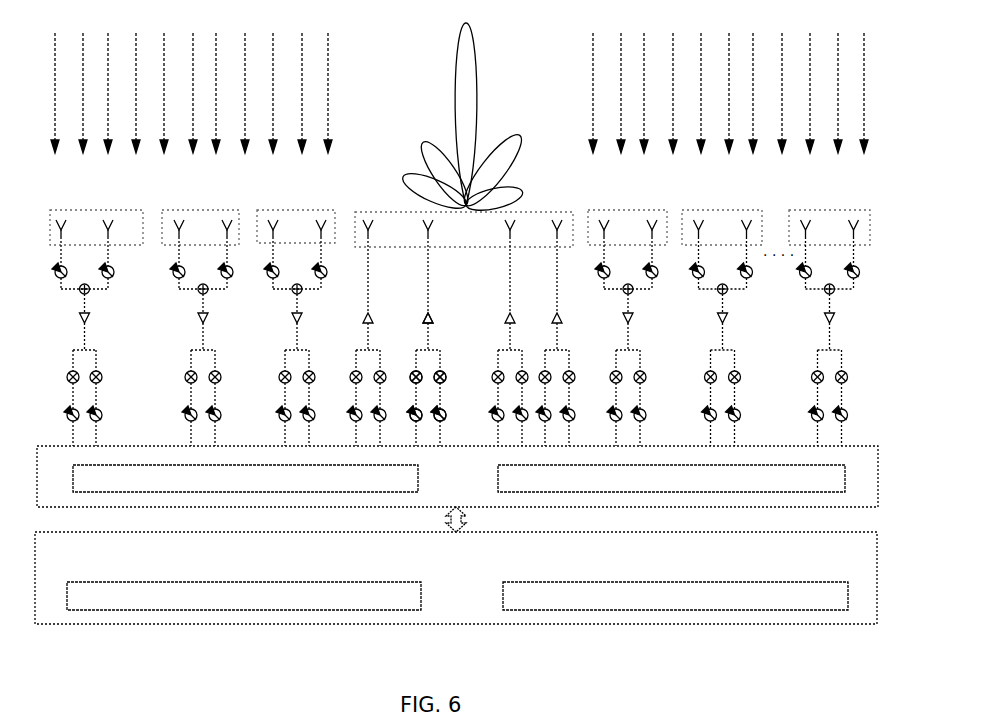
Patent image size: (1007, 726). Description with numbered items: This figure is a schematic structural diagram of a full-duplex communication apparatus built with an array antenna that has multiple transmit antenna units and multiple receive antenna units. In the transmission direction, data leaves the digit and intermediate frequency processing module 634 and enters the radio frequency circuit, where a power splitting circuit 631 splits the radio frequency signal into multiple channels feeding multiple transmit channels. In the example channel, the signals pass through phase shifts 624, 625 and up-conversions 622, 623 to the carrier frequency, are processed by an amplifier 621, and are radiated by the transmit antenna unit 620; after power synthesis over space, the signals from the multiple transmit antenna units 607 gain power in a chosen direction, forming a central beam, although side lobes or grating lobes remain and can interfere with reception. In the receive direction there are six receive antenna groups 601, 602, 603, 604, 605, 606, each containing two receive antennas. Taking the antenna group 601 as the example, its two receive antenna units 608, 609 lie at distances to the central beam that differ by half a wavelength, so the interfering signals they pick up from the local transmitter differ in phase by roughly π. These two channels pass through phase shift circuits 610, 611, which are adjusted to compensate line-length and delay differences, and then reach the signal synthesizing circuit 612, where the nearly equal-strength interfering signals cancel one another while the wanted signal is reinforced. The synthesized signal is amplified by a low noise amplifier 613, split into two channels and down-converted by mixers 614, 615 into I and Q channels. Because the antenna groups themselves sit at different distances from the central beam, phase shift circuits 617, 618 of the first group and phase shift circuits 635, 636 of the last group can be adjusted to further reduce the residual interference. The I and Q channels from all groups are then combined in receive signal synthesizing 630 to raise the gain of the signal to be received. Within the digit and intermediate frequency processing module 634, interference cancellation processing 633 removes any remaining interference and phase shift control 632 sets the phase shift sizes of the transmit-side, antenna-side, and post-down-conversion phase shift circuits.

The receive antenna group 601 is at (128, 190).
The receive antenna group 602 is at (190, 210).
The receive antenna group 603 is at (283, 210).
The receive antenna group 604 is at (620, 210).
The receive antenna group 605 is at (713, 210).
The receive antenna group 606 is at (820, 210).
The transmit antenna units 607 is at (412, 205).
The receive antenna unit 608 is at (75, 243).
The receive antenna unit 609 is at (122, 243).
The phase shift circuit 610 is at (73, 266).
The phase shift circuit 611 is at (120, 266).
The signal synthesizing circuit 612 is at (102, 302).
The low noise amplifier 613 is at (100, 320).
The mixer 614 is at (56, 378).
The mixer 615 is at (110, 378).
The phase shift circuit 617 is at (55, 414).
The phase shift circuit 618 is at (109, 414).
The transmit antenna unit 620 is at (461, 329).
The amplifier 621 is at (446, 317).
The up-conversion 622 is at (404, 370).
The up-conversion 623 is at (452, 370).
The phase shift 624 is at (404, 406).
The phase shift 625 is at (450, 406).
The receive signal synthesizing 630 is at (245, 478).
The power splitting circuit 631 is at (671, 478).
The phase shift control 632 is at (244, 596).
The interference cancellation processing 633 is at (675, 596).
The digit and intermediate frequency processing module 634 is at (456, 578).
The phase shift circuit 635 is at (800, 425).
The phase shift circuit 636 is at (856, 425).